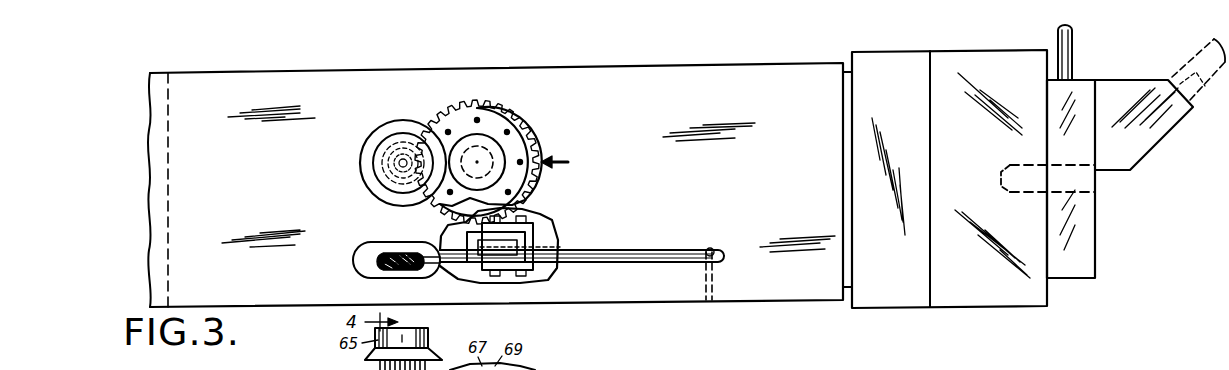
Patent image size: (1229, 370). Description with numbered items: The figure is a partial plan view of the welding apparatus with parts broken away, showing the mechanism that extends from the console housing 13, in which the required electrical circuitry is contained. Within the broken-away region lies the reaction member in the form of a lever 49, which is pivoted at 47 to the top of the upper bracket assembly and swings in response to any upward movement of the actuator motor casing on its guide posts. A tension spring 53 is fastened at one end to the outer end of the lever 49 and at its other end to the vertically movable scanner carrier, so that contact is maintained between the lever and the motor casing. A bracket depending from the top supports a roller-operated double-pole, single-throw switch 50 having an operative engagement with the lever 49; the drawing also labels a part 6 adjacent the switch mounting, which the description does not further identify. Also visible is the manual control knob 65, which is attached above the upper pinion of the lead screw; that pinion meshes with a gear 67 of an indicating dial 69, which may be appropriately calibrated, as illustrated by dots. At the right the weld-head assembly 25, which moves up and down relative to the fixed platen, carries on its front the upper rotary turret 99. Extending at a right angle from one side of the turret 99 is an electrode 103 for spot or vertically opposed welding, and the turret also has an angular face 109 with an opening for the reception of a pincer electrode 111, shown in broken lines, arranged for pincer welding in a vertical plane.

The console housing 13 is at (150, 180).
The manual control knob 65 is at (378, 143).
The gear 67 is at (478, 104).
The indicating dial 69 is at (491, 151).
The tension spring 53 is at (398, 250).
The mounting bracket 6 is at (462, 274).
The roller-operated double-pole, single-throw switch 50 is at (532, 226).
The lever 49 is at (628, 250).
The pivot 47 is at (714, 278).
The weld-head assembly 25 is at (996, 304).
The upper rotary turret 99 is at (1125, 165).
The electrode 103 is at (1073, 42).
The angular face 109 is at (1183, 82).
The pincer electrode 111 is at (1203, 56).